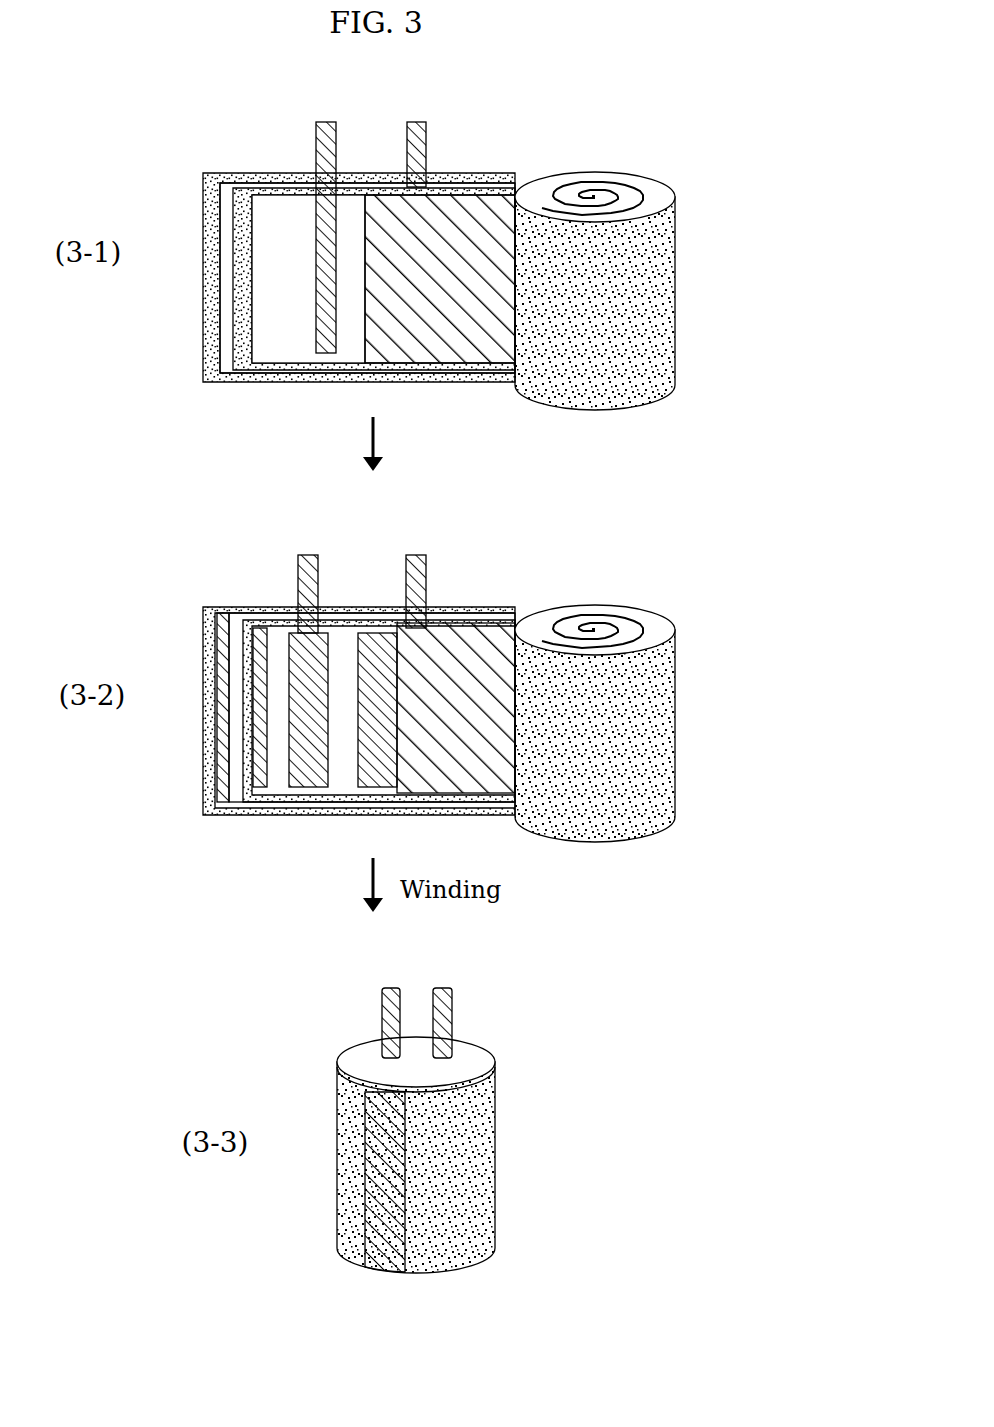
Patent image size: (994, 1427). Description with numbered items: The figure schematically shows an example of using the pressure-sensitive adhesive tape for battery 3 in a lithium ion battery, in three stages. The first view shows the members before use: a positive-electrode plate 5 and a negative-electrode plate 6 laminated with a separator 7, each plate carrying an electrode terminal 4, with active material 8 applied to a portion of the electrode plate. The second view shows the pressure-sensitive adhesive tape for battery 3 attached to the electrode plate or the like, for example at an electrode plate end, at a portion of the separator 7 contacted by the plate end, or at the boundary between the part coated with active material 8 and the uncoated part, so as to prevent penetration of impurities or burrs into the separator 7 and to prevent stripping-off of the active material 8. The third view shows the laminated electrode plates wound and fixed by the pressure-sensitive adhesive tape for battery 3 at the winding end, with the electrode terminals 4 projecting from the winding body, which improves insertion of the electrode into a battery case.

The pressure-sensitive adhesive tape for battery 3 is at (258, 788).
The electrode terminal 4 is at (326, 122).
The positive-electrode plate 5 is at (278, 355).
The negative-electrode plate 6 is at (230, 186).
The separator 7 is at (240, 305).
The active material 8 is at (477, 194).